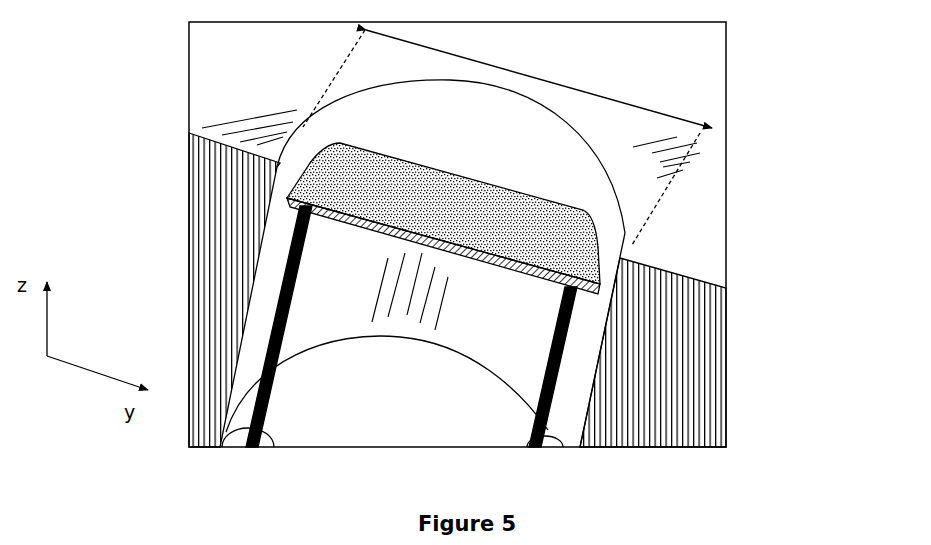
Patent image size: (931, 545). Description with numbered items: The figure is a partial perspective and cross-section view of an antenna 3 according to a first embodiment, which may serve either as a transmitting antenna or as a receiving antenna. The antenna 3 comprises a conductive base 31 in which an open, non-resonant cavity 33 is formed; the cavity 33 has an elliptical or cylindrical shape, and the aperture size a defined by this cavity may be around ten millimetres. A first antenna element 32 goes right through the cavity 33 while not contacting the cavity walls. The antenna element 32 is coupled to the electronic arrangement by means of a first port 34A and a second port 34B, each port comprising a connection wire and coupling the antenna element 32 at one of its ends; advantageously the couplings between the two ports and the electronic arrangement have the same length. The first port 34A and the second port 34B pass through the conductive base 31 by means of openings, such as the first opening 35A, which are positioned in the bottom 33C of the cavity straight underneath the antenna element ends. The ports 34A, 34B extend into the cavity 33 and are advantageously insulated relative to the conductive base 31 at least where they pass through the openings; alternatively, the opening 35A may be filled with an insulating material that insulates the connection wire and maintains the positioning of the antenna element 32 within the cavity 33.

The antenna 3 is at (146, 51).
The conductive base 31 is at (708, 223).
The first antenna element 32 is at (518, 250).
The cavity 33 is at (320, 141).
The bottom of the cavity 33C is at (343, 427).
The first port 34A is at (297, 223).
The second port 34B is at (565, 362).
The first opening 35A is at (237, 447).
The aperture size a is at (582, 88).